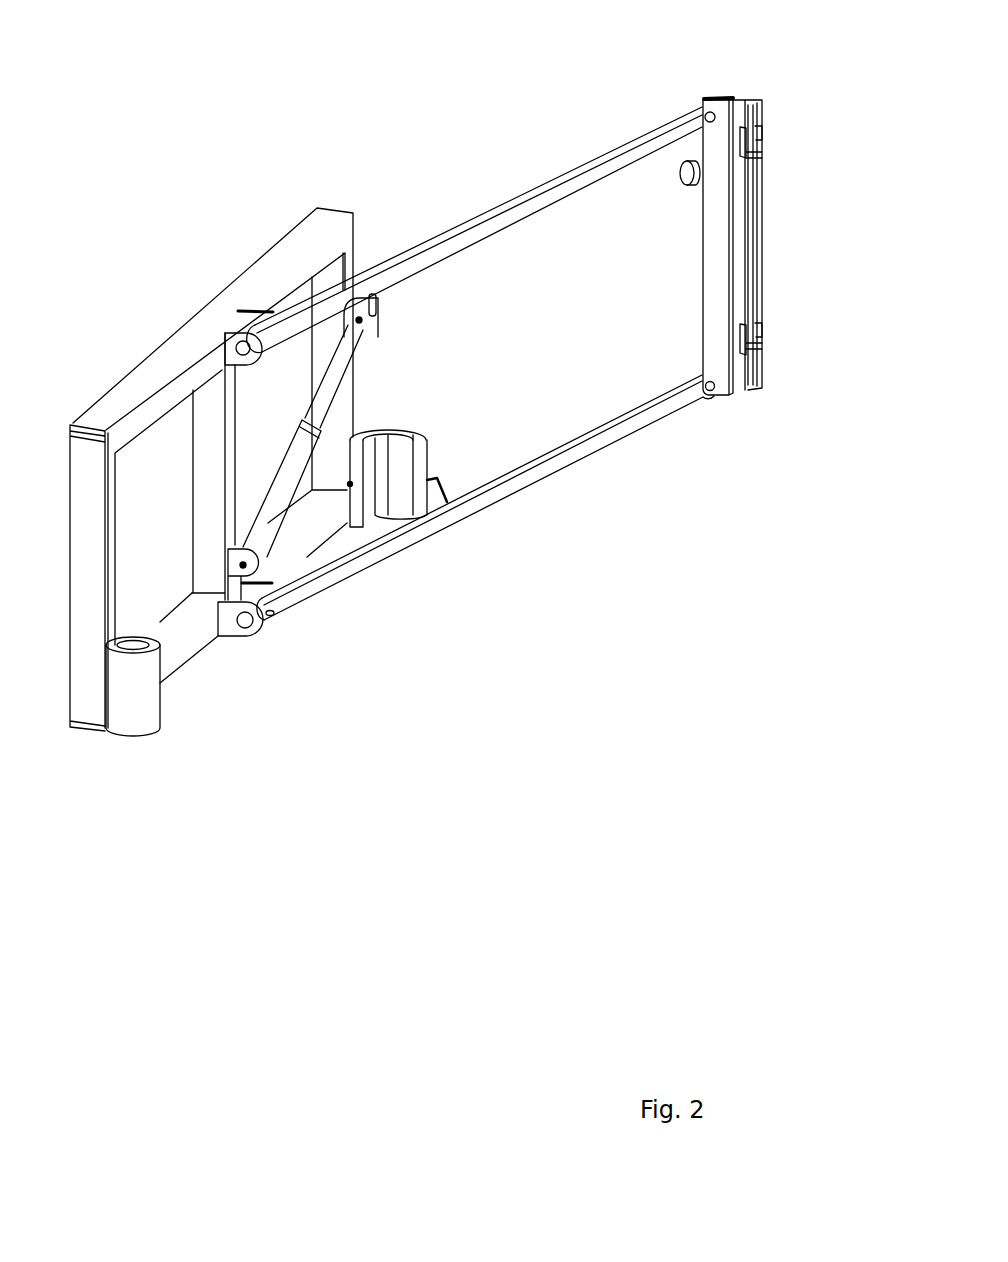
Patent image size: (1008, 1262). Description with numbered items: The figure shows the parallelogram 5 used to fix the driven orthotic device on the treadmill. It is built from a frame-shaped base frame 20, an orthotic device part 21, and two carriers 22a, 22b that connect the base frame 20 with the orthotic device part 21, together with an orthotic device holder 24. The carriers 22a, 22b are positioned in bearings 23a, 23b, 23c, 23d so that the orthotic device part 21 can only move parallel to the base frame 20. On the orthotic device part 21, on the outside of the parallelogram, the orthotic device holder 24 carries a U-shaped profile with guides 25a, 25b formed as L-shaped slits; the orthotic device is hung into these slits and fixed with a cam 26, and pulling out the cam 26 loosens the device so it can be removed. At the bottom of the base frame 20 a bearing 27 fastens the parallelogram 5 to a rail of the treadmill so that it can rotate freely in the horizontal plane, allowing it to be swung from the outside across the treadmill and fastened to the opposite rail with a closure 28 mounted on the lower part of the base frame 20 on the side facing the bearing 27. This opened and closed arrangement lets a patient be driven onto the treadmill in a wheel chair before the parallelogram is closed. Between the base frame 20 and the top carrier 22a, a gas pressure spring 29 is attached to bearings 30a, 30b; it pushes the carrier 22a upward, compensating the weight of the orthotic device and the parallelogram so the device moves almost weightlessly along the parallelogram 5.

The parallelogram 5 is at (447, 688).
The base frame 20 is at (282, 250).
The orthotic device part 21 is at (713, 260).
The top carrier 22a is at (478, 227).
The carrier 22b is at (478, 503).
The bearing 23a is at (709, 108).
The bearing 23b is at (710, 393).
The bearing 23c is at (242, 347).
The bearing 23d is at (249, 627).
The orthotic device holder 24 is at (738, 240).
The guide 25a is at (752, 128).
The guide 25b is at (750, 347).
The cam 26 is at (680, 178).
The bearing 27 is at (143, 723).
The closure 28 is at (402, 460).
The gas pressure spring 29 is at (303, 447).
The bearing 30a is at (363, 320).
The bearing 30b is at (238, 564).